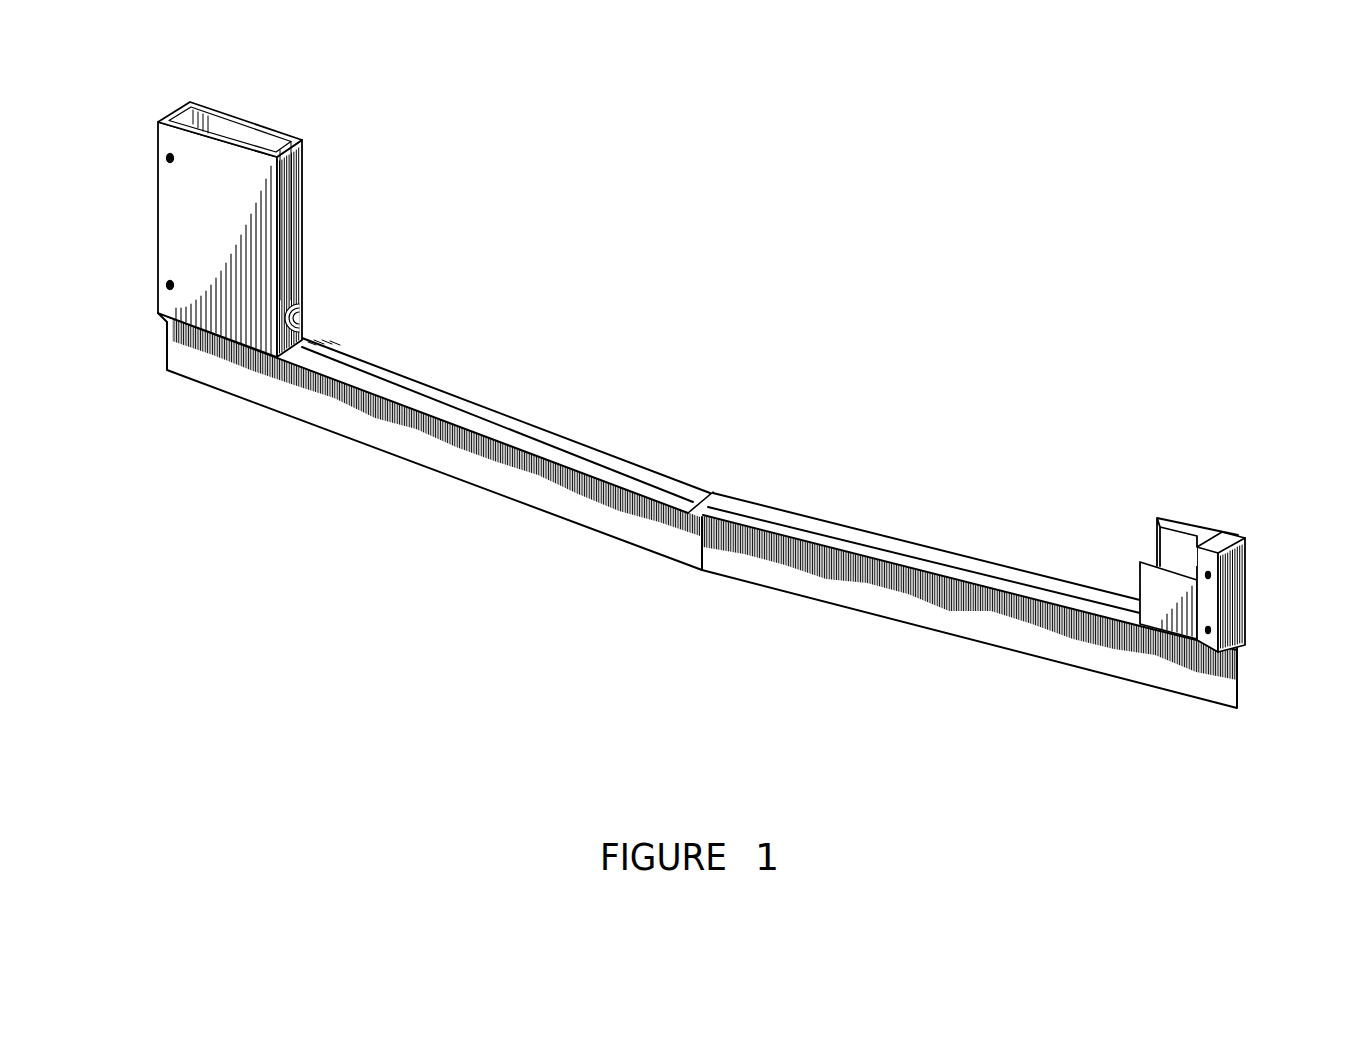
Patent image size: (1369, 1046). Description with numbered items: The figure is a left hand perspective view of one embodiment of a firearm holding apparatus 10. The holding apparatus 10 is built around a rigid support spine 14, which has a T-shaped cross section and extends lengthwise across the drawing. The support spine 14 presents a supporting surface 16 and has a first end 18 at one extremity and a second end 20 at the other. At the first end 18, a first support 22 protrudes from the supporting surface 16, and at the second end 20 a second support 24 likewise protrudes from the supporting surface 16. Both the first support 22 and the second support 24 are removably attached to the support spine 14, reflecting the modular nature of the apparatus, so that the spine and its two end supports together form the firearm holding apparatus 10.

The firearm holding apparatus 10 is at (504, 150).
The rigid support spine 14 is at (538, 493).
The supporting surface 16 is at (522, 423).
The first end 18 is at (283, 377).
The second end 20 is at (1247, 643).
The first support 22 is at (288, 177).
The second support 24 is at (1172, 535).